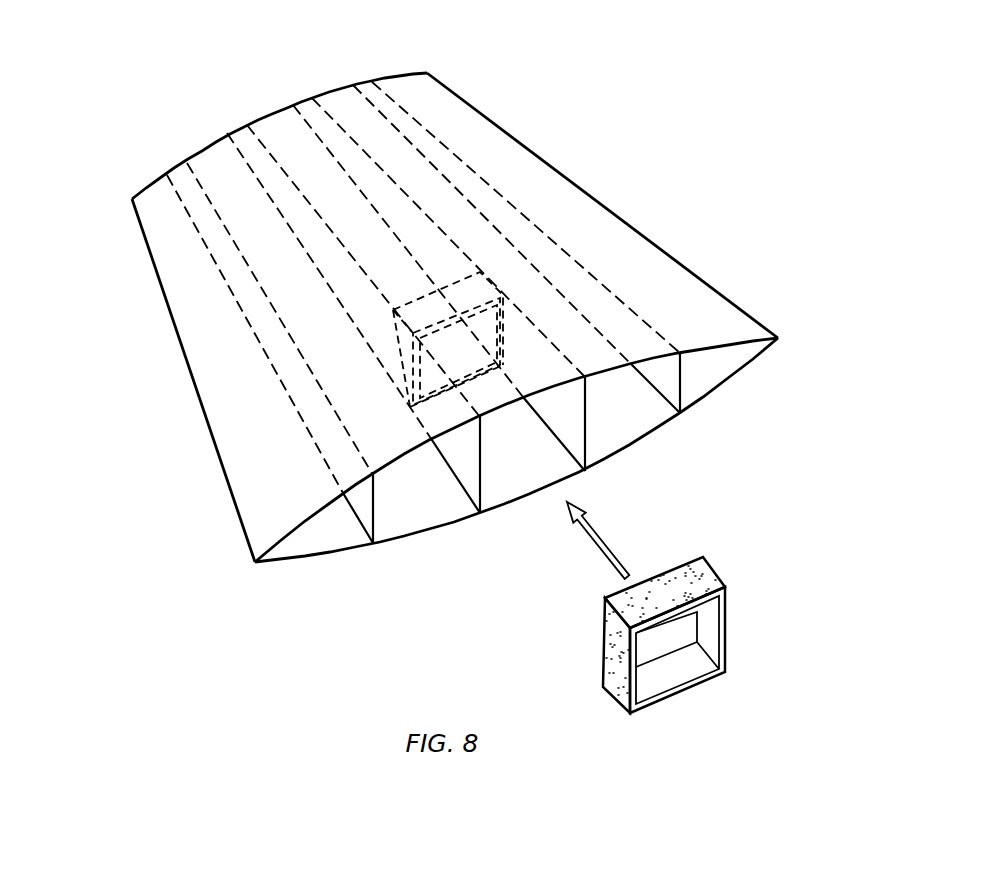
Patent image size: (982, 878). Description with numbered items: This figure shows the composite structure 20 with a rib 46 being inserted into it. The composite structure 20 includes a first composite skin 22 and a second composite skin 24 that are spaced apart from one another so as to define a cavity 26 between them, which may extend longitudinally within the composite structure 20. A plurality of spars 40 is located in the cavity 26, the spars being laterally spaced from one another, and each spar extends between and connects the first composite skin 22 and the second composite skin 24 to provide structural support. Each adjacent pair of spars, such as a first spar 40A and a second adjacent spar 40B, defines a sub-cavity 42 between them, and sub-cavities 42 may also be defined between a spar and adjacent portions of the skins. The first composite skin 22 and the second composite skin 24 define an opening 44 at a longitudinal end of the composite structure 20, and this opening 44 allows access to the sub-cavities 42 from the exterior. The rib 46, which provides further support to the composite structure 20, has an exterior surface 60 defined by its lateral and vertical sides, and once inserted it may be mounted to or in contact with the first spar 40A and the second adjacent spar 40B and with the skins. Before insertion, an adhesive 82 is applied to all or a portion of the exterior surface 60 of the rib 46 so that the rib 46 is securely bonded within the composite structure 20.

The composite structure 20 is at (421, 314).
The first composite skin 22 is at (683, 295).
The second composite skin 24 is at (722, 366).
The cavity 26 is at (497, 492).
The plurality of spars 40 is at (546, 496).
The first spar 40A is at (470, 467).
The second adjacent spar 40B is at (567, 417).
The sub-cavity 42 is at (512, 470).
The opening 44 is at (553, 512).
The rib 46 is at (760, 614).
The exterior surface 60 is at (712, 580).
The adhesive 82 is at (687, 578).